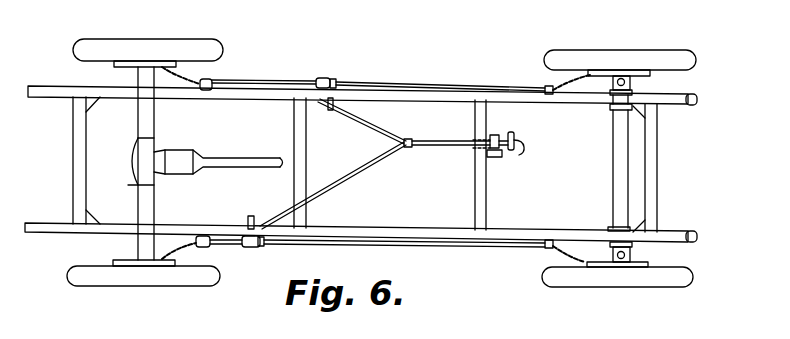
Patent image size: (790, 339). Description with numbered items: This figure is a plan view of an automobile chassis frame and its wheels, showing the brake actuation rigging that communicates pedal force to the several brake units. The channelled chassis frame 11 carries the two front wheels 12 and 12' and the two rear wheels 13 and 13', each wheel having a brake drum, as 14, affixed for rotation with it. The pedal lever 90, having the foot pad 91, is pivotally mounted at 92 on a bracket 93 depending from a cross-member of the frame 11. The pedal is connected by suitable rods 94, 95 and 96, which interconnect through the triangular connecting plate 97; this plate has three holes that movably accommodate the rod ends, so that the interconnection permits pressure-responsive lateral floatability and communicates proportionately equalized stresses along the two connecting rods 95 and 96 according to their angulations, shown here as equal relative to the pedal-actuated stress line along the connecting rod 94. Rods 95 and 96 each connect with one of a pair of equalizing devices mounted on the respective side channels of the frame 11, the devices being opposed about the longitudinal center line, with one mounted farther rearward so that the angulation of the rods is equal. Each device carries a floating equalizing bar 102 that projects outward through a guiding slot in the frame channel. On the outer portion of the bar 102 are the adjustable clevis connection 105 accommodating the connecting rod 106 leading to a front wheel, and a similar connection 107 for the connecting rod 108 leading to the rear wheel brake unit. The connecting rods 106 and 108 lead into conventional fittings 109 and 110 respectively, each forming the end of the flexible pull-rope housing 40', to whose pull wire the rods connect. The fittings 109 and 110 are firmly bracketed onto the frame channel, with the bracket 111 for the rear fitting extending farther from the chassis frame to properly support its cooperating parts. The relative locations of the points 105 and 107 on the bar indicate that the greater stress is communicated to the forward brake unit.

The chassis frame 11 is at (30, 88).
The front wheel 12 is at (620, 70).
The front wheel 12' is at (617, 269).
The rear wheel 13 is at (152, 42).
The rear wheel 13' is at (139, 286).
The brake drum 14 is at (113, 262).
The flexible pull-rope housing 40' is at (376, 78).
The pedal lever 90 is at (519, 151).
The foot pad 91 is at (515, 135).
The pivot 92 is at (495, 135).
The bracket 93 is at (497, 158).
The connecting rod 94 is at (445, 148).
The connecting rod 95 is at (381, 129).
The connecting rod 96 is at (366, 178).
The triangular connecting plate 97 is at (413, 140).
The floating equalizing bar 102 is at (331, 111).
The adjustable clevis connection 105 is at (320, 80).
The connecting rod 106 is at (375, 87).
The clevis connection 107 is at (335, 81).
The connecting rod 108 is at (272, 81).
The fitting 109 is at (556, 250).
The fitting 110 is at (200, 250).
The bracket 111 is at (208, 91).